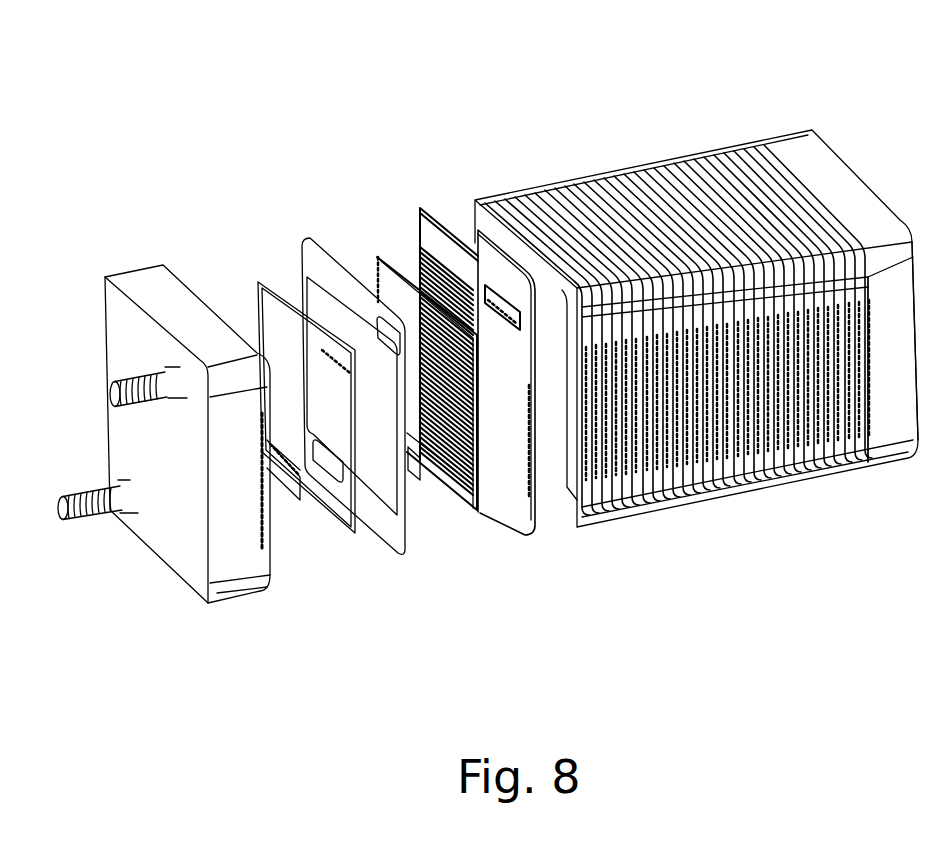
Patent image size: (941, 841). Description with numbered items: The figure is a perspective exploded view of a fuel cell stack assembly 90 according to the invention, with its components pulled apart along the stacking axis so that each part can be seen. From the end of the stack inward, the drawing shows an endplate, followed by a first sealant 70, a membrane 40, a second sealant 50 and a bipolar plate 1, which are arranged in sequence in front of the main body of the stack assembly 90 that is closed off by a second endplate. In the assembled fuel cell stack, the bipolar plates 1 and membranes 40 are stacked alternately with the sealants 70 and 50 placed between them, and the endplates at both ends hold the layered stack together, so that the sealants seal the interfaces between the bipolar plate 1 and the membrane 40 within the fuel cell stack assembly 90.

The bipolar plate 1 is at (515, 520).
The membrane 40 is at (397, 542).
The sealant 50 is at (480, 510).
The sealant 70 is at (353, 533).
The fuel cell stack assembly 90 is at (641, 140).